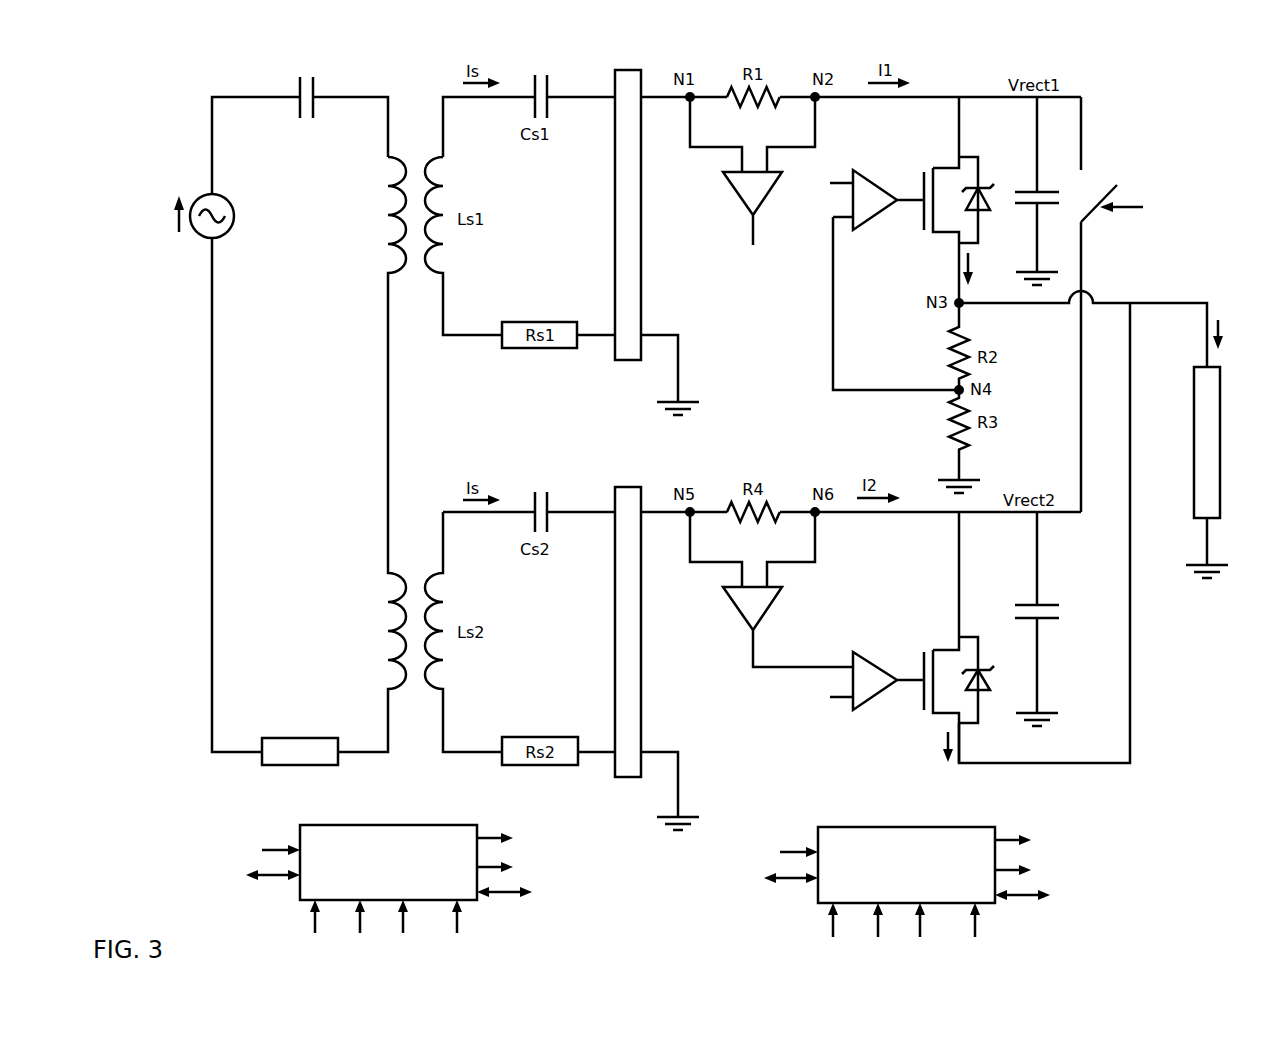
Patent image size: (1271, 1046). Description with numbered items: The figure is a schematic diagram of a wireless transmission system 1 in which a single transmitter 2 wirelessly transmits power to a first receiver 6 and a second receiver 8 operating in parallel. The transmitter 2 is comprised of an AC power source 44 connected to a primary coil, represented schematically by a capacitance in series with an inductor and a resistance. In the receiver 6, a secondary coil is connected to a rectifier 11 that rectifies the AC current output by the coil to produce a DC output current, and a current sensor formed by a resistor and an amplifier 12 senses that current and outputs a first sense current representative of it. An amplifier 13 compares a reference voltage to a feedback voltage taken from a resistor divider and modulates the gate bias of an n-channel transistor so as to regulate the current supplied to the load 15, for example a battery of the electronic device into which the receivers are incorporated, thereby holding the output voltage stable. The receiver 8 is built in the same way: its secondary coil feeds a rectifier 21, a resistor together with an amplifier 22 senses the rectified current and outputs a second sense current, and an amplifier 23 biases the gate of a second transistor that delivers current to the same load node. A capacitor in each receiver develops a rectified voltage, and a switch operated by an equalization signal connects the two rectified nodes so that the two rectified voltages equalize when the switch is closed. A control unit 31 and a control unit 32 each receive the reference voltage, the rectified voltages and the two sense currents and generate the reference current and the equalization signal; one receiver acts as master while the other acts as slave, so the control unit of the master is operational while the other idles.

The wireless transmission system 1 is at (1115, 402).
The transmitter 2 is at (251, 406).
The receiver 6 is at (971, 282).
The receiver 8 is at (910, 583).
The rectifier 11 is at (625, 362).
The amplifier 12 is at (737, 200).
The amplifier 13 is at (875, 180).
The load 15 is at (1192, 387).
The rectifier 21 is at (625, 778).
The amplifier 22 is at (737, 615).
The amplifier 23 is at (875, 662).
The control unit 31 is at (423, 825).
The control unit 32 is at (935, 827).
The AC power source 44 is at (225, 198).